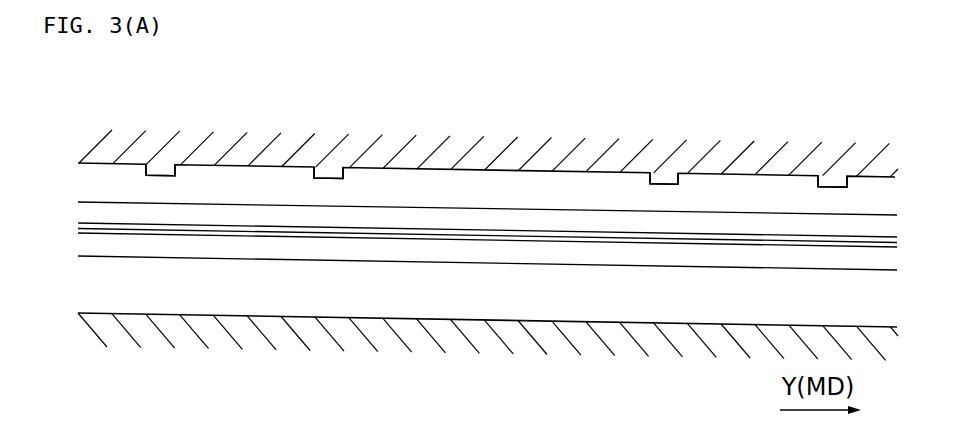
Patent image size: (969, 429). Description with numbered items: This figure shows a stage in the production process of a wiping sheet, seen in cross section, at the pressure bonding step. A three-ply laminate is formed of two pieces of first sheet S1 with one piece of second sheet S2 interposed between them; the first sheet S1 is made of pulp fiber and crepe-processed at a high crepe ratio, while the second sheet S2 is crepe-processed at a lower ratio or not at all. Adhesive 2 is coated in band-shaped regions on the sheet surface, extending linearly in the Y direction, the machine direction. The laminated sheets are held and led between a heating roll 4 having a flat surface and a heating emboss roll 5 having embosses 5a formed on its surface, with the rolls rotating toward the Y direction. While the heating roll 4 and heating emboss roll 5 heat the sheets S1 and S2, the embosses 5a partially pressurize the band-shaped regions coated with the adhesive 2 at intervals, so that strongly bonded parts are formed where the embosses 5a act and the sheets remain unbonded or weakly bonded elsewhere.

The adhesive 2 is at (163, 232).
The heating roll 4 is at (703, 341).
The heating emboss roll 5 is at (706, 154).
The emboss 5a is at (660, 184).
The first sheet S1 is at (406, 206).
The second sheet S2 is at (245, 233).